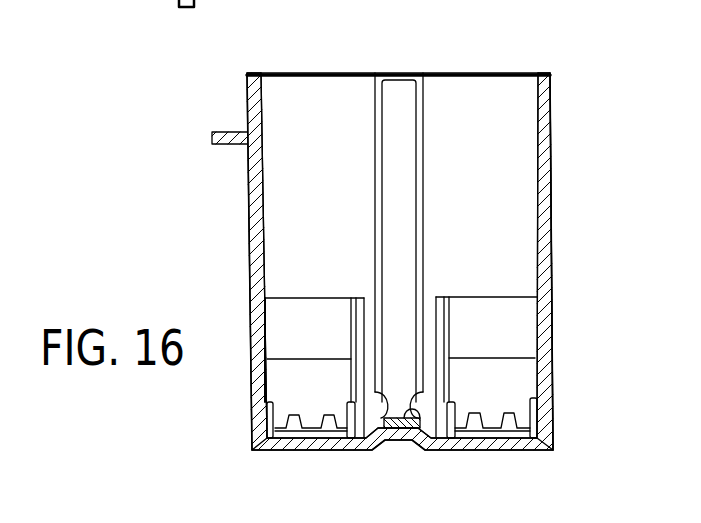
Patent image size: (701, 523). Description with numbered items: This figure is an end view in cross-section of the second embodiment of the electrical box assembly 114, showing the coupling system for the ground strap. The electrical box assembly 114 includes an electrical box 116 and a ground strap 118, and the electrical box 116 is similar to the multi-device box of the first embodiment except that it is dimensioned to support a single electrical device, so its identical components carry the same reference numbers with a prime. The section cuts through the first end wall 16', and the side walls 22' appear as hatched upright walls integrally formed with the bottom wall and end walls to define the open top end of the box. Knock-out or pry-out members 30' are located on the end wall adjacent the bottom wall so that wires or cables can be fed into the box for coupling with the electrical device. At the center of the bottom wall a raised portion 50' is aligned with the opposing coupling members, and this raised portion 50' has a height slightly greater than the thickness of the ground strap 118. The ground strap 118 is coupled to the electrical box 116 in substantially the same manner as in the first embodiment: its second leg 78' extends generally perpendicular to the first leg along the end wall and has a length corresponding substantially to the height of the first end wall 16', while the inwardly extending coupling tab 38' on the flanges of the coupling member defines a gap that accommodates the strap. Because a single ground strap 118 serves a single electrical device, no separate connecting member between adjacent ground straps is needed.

The first end wall 16' is at (400, 244).
The side walls 22' is at (394, 259).
The electrical box assembly 114 is at (553, 57).
The electrical box 116 is at (558, 158).
The ground strap 118 is at (405, 125).
The second leg 78' is at (438, 241).
The knock-out or pry-out members 30' is at (401, 335).
The raised portion 50' is at (402, 457).
The coupling tab 38' is at (433, 438).